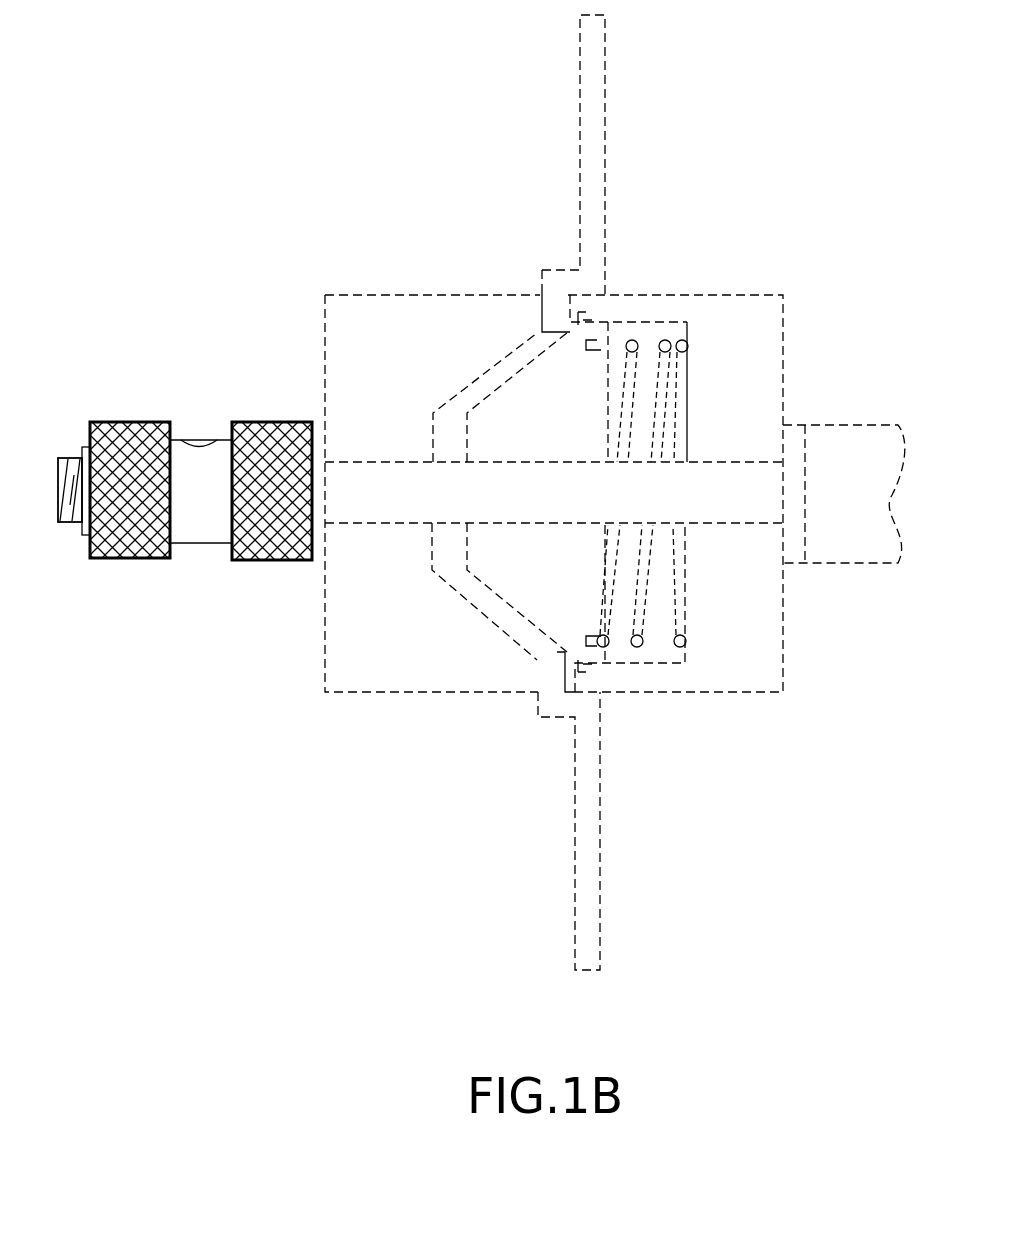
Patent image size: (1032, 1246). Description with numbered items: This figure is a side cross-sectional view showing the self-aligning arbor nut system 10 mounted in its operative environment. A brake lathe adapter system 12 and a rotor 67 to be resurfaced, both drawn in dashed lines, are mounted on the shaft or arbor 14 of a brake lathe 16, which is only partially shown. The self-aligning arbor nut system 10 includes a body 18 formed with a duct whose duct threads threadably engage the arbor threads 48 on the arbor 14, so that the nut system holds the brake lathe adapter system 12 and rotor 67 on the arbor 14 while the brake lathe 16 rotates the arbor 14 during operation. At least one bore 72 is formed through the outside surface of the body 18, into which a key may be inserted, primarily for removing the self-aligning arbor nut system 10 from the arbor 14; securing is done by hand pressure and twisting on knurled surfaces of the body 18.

The self-aligning arbor nut system 10 is at (116, 360).
The brake lathe adapter system 12 is at (737, 296).
The arbor 14 is at (387, 524).
The brake lathe 16 is at (875, 425).
The body 18 is at (130, 560).
The arbor threads 48 is at (63, 521).
The rotor 67 is at (604, 76).
The bore 72 is at (197, 440).